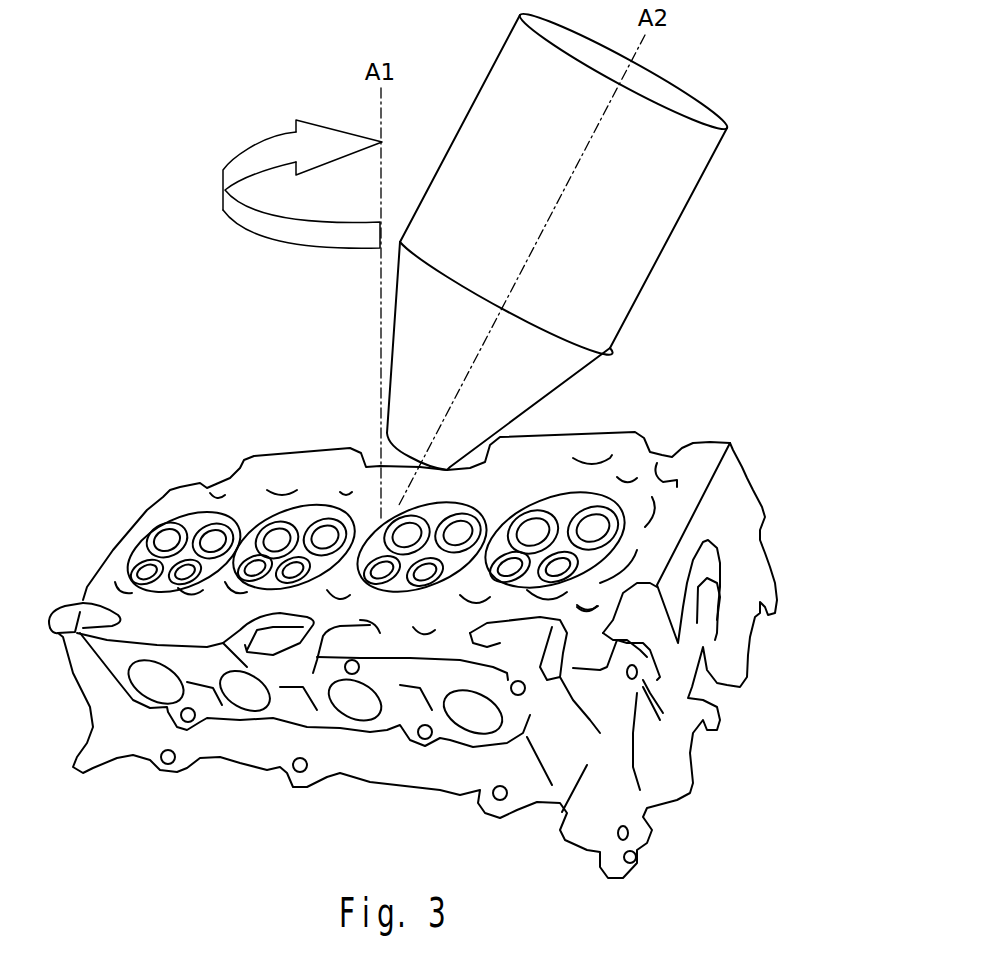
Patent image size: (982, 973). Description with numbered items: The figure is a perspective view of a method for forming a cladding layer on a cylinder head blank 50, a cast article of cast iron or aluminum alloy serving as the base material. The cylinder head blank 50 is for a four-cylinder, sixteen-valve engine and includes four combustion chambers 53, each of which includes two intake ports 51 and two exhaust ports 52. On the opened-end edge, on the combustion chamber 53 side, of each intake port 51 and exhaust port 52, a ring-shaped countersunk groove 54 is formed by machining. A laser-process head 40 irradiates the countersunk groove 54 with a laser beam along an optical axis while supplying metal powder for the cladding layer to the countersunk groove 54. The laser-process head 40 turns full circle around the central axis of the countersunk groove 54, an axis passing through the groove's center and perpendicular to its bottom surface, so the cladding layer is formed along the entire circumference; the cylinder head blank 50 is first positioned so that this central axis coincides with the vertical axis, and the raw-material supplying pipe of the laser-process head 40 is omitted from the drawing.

The laser-process head 40 is at (670, 230).
The cylinder head blank 50 is at (761, 481).
The intake port 51 is at (167, 543).
The exhaust port 52 is at (150, 572).
The combustion chamber 53 is at (198, 522).
The countersunk groove 54 is at (155, 533).